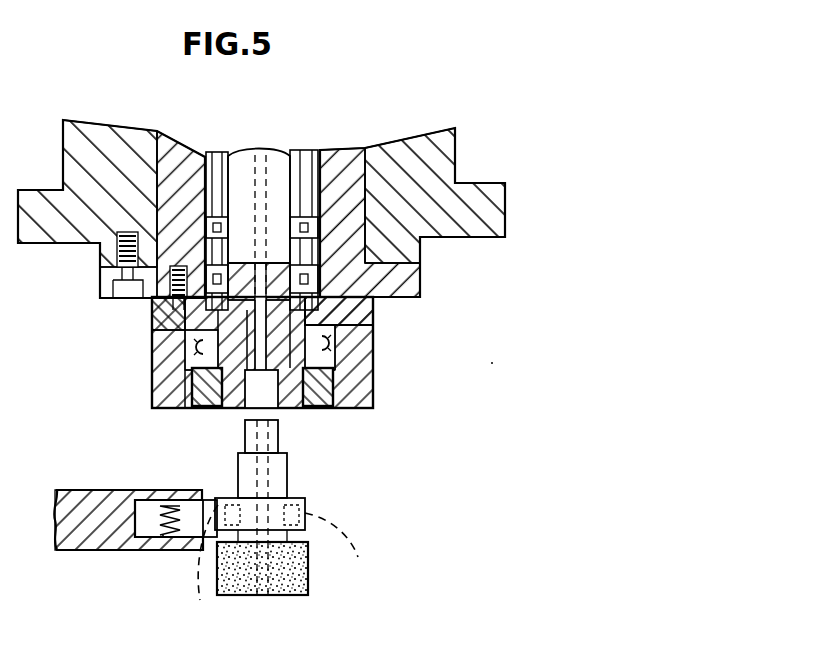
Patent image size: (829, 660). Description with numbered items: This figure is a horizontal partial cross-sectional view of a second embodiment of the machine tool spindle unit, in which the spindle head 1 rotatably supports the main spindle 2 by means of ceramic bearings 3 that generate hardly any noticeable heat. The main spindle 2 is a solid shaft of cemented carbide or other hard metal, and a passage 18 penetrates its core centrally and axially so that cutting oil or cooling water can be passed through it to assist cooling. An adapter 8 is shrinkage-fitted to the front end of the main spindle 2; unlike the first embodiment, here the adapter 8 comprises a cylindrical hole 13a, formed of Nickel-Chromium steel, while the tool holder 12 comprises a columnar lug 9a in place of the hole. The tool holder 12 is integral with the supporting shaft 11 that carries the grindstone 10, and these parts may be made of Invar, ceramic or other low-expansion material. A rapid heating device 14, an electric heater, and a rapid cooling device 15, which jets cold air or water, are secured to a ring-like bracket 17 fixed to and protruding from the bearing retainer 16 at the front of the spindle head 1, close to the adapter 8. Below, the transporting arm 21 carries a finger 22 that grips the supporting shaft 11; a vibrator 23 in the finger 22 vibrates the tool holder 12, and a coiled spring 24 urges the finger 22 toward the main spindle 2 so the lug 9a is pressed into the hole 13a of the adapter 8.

The spindle head 1 is at (455, 138).
The main spindle 2 is at (277, 165).
The bearing 3 is at (318, 218).
The adapter 8 is at (152, 310).
The columnar lug 9a is at (268, 440).
The grindstone 10 is at (308, 590).
The supporting shaft 11 is at (290, 490).
The tool holder 12 is at (278, 460).
The cylindrical hole 13a is at (240, 411).
The rapid heating device 14 is at (152, 396).
The rapid cooling device 15 is at (190, 347).
The bearing retainer 16 is at (375, 312).
The ring-like bracket 17 is at (375, 383).
The passage 18 is at (250, 178).
The transporting arm 21 is at (65, 552).
The finger 22 is at (216, 505).
The vibrator 23 is at (299, 571).
The coiled spring 24 is at (170, 540).